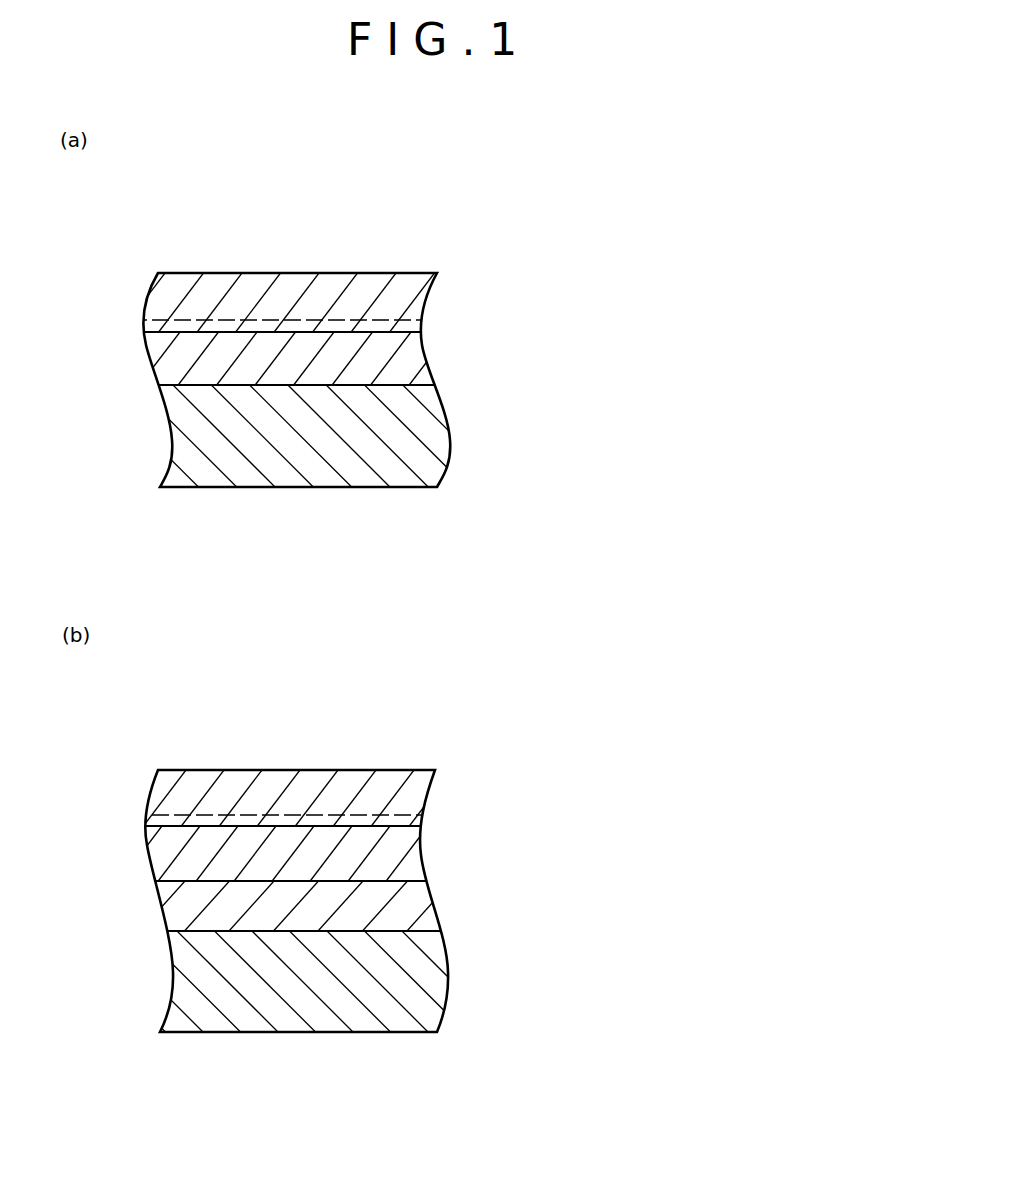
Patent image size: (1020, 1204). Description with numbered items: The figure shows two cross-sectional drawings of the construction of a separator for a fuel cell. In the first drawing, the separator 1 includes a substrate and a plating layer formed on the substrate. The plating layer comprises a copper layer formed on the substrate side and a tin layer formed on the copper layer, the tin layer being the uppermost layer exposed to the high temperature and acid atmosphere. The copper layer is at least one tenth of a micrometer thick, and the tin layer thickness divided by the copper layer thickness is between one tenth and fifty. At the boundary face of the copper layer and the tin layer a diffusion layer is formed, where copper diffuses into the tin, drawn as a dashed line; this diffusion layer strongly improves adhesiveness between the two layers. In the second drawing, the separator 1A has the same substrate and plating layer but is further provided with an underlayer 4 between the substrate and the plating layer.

The separator for a fuel cell 1 is at (331, 256).
The separator 1A is at (331, 752).
The underlayer 4 is at (420, 910).